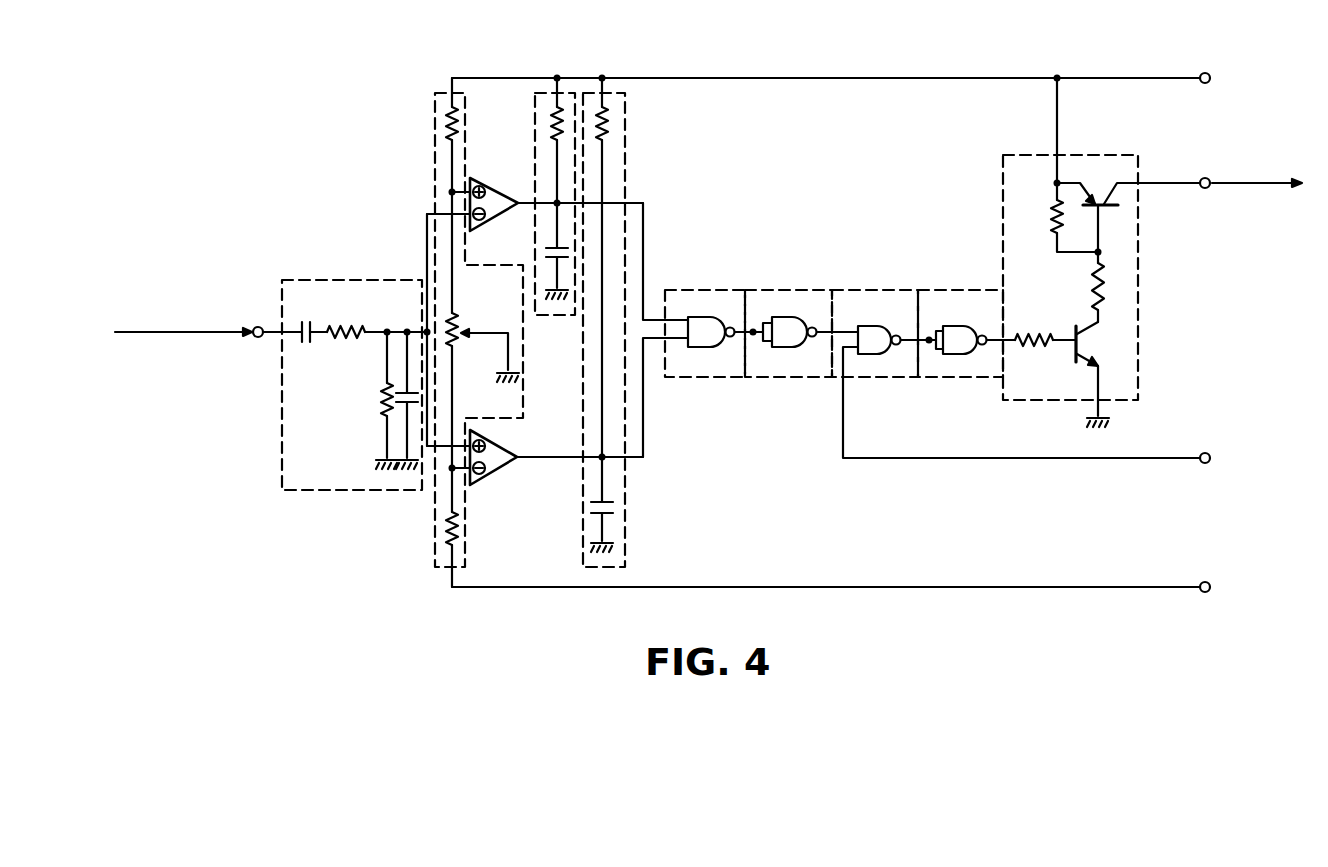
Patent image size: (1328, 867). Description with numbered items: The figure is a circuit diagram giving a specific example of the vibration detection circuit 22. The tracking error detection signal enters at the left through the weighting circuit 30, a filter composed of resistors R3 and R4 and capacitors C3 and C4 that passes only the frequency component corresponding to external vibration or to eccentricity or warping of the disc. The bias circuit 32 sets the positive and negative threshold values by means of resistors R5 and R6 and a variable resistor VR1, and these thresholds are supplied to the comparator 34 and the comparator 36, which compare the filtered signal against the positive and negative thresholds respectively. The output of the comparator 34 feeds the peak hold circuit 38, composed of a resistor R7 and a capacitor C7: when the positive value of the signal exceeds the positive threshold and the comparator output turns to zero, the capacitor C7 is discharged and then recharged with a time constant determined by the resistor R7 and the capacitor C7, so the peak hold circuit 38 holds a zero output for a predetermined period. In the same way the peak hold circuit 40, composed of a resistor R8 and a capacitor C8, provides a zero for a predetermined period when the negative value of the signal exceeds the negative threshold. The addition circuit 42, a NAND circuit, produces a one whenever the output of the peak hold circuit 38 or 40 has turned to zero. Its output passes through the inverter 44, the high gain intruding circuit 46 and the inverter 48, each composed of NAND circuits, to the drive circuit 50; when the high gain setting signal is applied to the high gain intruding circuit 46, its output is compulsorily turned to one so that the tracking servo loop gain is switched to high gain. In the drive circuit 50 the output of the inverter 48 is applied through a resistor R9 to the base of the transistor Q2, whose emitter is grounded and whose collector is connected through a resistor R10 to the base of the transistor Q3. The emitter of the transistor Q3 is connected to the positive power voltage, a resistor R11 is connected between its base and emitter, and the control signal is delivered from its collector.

The vibration detection circuit 22 is at (1120, 61).
The weighting circuit 30 is at (328, 280).
The bias circuit 32 is at (435, 118).
The comparator 34 is at (494, 186).
The comparator 36 is at (500, 444).
The peak hold circuit 38 is at (535, 93).
The peak hold circuit 40 is at (625, 160).
The addition circuit 42 is at (716, 288).
The inverter 44 is at (790, 288).
The high gain intruding circuit 46 is at (872, 288).
The inverter 48 is at (945, 288).
The drive circuit 50 is at (1078, 252).
The resistor R3 is at (346, 326).
The resistor R4 is at (380, 400).
The resistor R5 is at (445, 133).
The resistor R6 is at (445, 528).
The resistor R7 is at (560, 108).
The resistor R8 is at (610, 115).
The resistor R9 is at (1037, 348).
The resistor R10 is at (1105, 288).
The resistor R11 is at (1053, 221).
The capacitor C3 is at (316, 345).
The capacitor C4 is at (403, 410).
The capacitor C7 is at (552, 250).
The capacitor C8 is at (612, 523).
The variable resistor VR1 is at (457, 334).
The transistor Q2 is at (1072, 330).
The transistor Q3 is at (1112, 206).